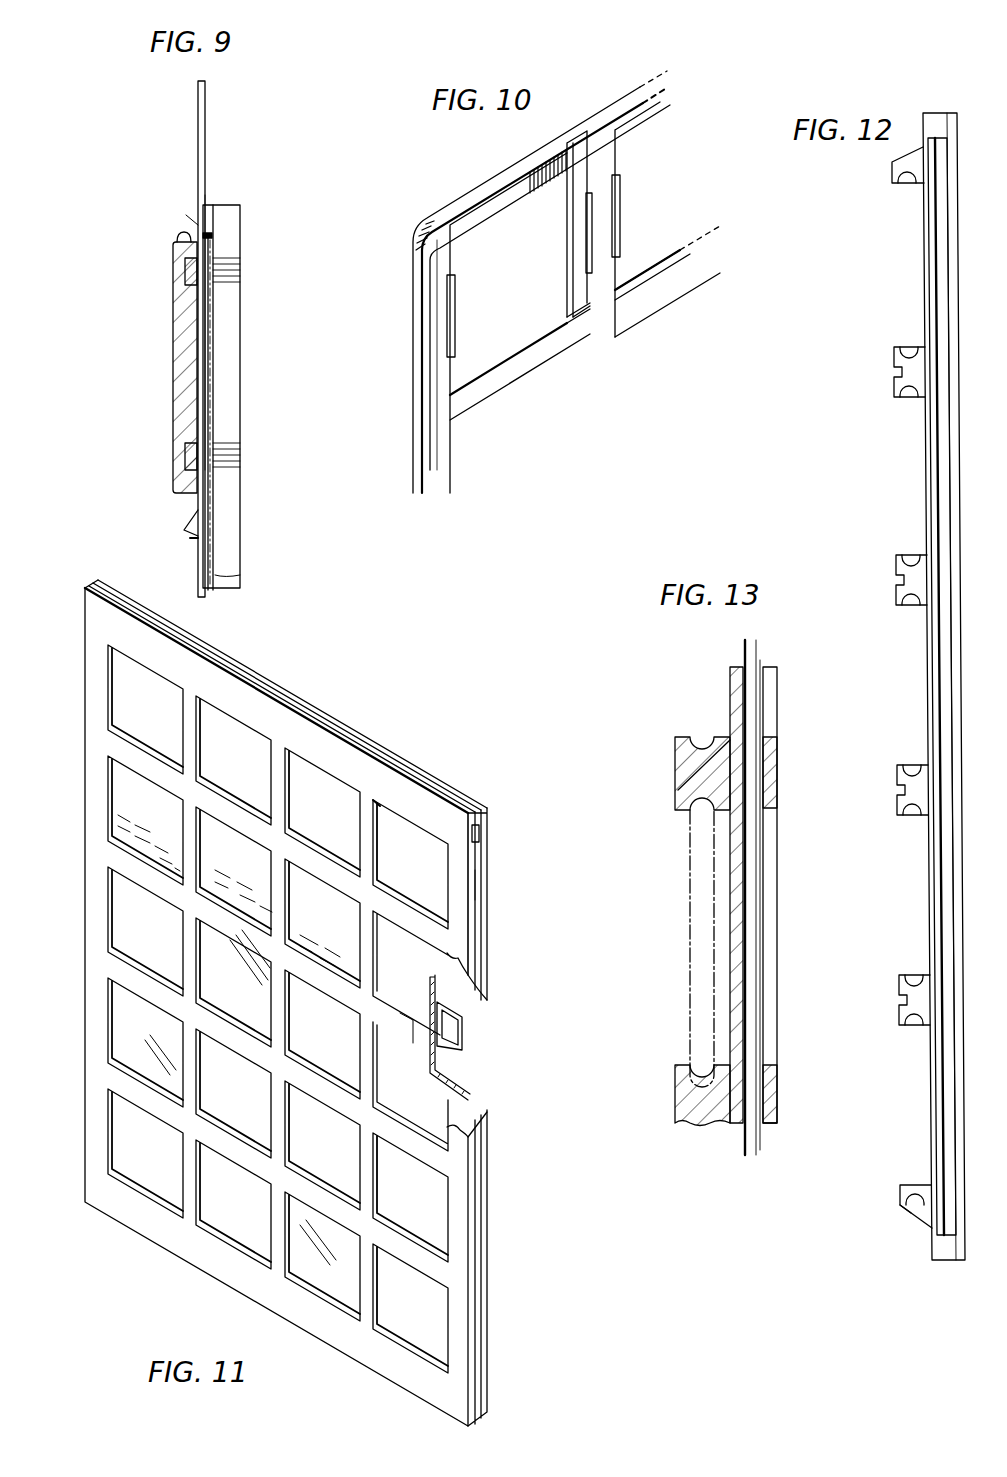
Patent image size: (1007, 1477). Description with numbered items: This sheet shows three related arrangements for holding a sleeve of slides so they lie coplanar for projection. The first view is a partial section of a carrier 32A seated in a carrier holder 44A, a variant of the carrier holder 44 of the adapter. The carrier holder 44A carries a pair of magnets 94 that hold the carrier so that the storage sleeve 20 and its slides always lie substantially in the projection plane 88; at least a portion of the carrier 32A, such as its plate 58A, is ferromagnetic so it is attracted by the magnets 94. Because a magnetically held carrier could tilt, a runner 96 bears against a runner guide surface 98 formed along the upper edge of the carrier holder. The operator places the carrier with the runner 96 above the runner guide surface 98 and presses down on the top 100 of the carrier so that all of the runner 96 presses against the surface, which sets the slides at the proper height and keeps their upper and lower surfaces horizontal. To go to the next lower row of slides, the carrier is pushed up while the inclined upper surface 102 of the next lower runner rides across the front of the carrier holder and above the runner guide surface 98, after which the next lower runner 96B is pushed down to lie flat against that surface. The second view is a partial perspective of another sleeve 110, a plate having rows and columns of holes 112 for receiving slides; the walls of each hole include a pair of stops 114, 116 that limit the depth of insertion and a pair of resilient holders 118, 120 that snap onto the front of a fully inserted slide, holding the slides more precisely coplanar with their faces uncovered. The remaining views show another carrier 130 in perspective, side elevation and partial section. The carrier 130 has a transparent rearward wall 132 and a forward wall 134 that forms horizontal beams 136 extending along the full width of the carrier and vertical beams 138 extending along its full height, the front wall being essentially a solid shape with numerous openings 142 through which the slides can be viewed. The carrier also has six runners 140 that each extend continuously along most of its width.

In FIG. 9, the storage sleeve 20 is at (213, 318).
In FIG. 13, the storage sleeve 20 is at (758, 660).
In FIG. 9, the carrier 32A is at (197, 150).
In FIG. 13, the carrier holder 44 is at (690, 897).
In FIG. 9, the carrier holder 44A is at (185, 380).
In FIG. 9, the plate 58A is at (207, 186).
In FIG. 9, the projection plane 88 is at (213, 570).
In FIG. 9, the magnets 94 is at (185, 270).
In FIG. 9, the runner 96 is at (196, 214).
In FIG. 9, the next lower runner 96B is at (196, 536).
In FIG. 9, the runner guide surface 98 is at (180, 236).
In FIG. 9, the top of the carrier 100 is at (240, 207).
In FIG. 9, the inclined upper surface 102 is at (190, 528).
In FIG. 10, the sleeve 110 is at (410, 248).
In FIG. 10, the holes 112 is at (482, 220).
In FIG. 10, the stop 114 is at (452, 255).
In FIG. 10, the stop 116 is at (575, 178).
In FIG. 10, the resilient holder 118 is at (452, 335).
In FIG. 10, the resilient holder 120 is at (590, 222).
In FIG. 12, the carrier 130 is at (918, 512).
In FIG. 11, the carrier 130 is at (372, 748).
In FIG. 11, the transparent rearward wall 132 is at (472, 1095).
In FIG. 11, the forward wall 134 is at (472, 886).
In FIG. 11, the horizontal beams 136 is at (465, 938).
In FIG. 11, the vertical beams 138 is at (378, 800).
In FIG. 12, the runners 140 is at (902, 398).
In FIG. 11, the runners 140 is at (468, 1033).
In FIG. 11, the openings 142 is at (318, 762).